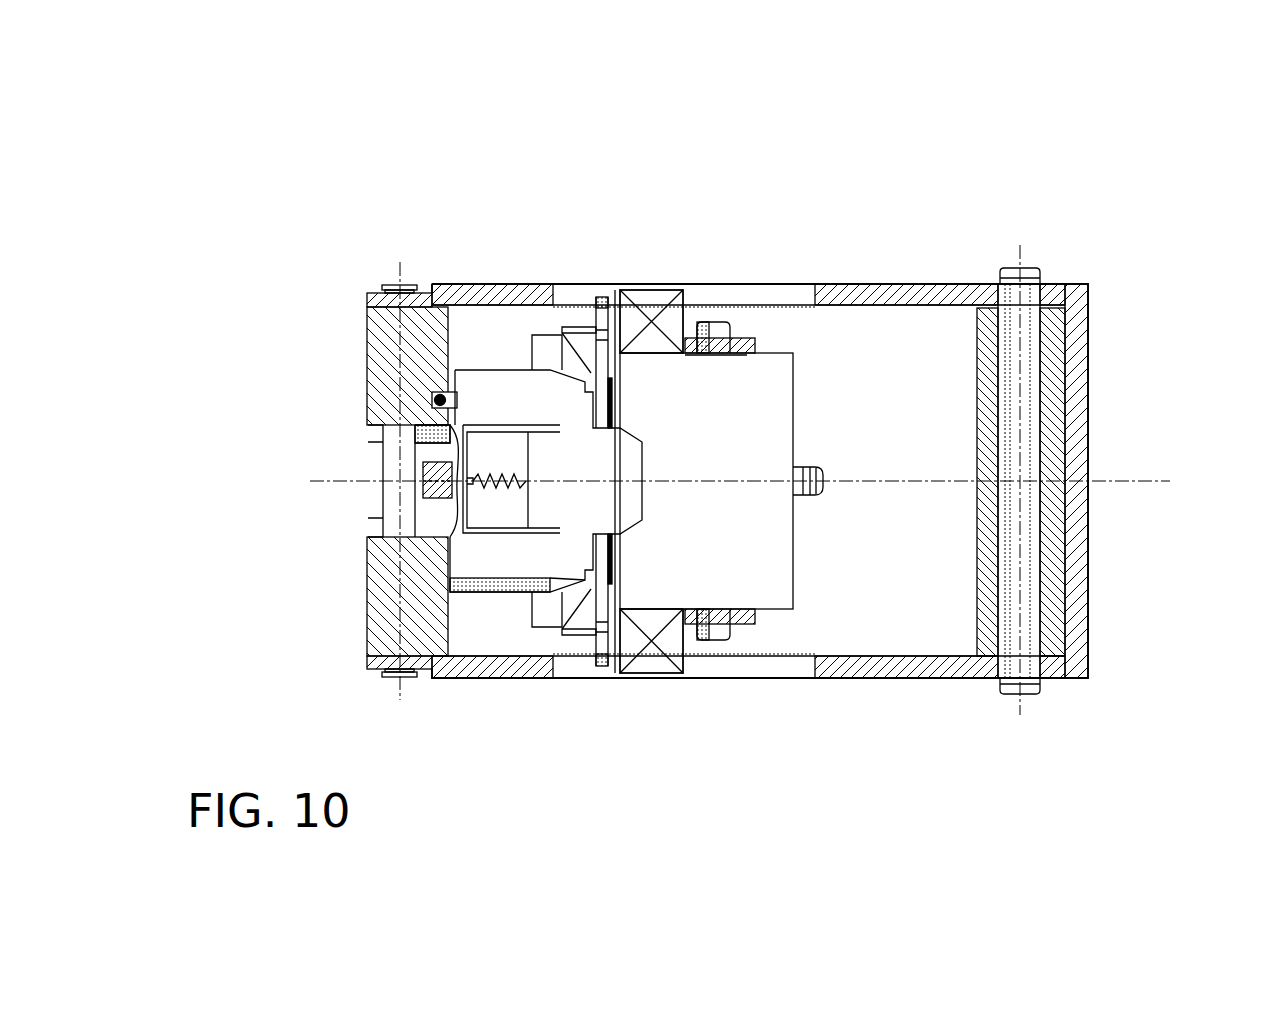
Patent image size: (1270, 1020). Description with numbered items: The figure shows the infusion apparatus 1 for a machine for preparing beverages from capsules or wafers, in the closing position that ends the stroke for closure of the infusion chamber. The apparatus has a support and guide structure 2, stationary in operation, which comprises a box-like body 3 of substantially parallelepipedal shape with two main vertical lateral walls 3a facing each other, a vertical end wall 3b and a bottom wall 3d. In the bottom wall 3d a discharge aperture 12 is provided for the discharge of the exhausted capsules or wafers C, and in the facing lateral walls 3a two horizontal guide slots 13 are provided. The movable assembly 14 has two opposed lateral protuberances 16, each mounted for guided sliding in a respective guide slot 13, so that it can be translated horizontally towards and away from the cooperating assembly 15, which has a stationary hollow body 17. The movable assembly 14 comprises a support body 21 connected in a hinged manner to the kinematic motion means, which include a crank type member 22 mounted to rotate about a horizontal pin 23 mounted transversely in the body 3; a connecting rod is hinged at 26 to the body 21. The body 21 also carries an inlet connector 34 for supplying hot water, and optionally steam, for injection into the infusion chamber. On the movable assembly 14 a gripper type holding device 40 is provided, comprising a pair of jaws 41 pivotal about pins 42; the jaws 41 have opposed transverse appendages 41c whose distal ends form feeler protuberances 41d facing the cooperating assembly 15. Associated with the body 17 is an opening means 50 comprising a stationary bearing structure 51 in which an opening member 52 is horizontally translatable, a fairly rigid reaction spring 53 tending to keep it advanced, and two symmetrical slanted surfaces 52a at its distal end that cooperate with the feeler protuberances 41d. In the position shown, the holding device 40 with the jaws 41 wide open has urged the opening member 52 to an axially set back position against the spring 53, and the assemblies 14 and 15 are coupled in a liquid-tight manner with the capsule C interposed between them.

The infusion apparatus 1 is at (1124, 266).
The support and guide structure 2 is at (437, 280).
The box-like body 3 is at (772, 445).
The lateral walls 3a is at (490, 282).
The end wall 3b is at (1090, 516).
The bottom wall 3d is at (396, 660).
The discharge aperture 12 is at (565, 605).
The guide slots 13 is at (782, 300).
The movable assembly 14 is at (790, 613).
The cooperating assembly 15 is at (478, 628).
The lateral protuberances 16 is at (648, 318).
The stationary hollow body 17 is at (400, 545).
The support body 21 is at (775, 397).
The crank type member 22 is at (1055, 602).
The horizontal pin 23 is at (1025, 428).
The hinge 26 is at (713, 325).
The inlet connector 34 is at (823, 470).
The gripper type holding device 40 is at (573, 318).
The jaws 41 is at (595, 298).
The transverse appendages 41c is at (603, 297).
The feeler protuberances 41d is at (614, 300).
The pins 42 is at (573, 320).
The opening means 50 is at (450, 378).
The stationary bearing structure 51 is at (452, 500).
The opening member 52 is at (493, 412).
The slanted surfaces 52a is at (735, 390).
The reaction spring 53 is at (485, 487).
The capsule or wafer C is at (666, 335).